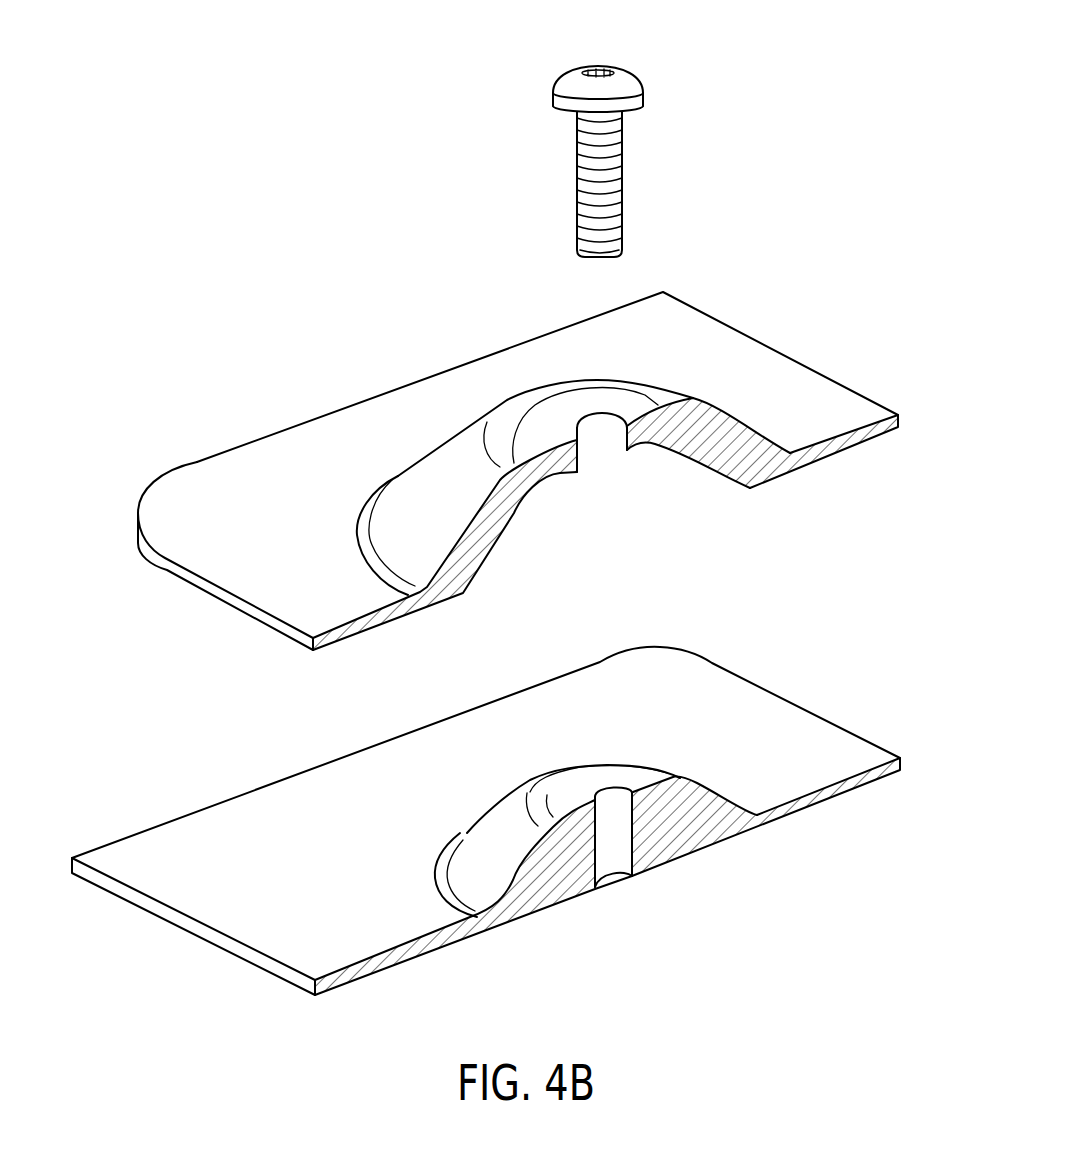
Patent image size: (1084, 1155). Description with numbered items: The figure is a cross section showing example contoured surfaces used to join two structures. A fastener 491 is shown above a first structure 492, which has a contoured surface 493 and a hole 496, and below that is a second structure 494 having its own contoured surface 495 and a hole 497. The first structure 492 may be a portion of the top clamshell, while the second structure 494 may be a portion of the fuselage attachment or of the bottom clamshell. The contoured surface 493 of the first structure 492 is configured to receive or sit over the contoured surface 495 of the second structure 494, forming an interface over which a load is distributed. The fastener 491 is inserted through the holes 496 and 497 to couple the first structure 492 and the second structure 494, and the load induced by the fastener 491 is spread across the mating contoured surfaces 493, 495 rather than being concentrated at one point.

The fastener 491 is at (577, 163).
The first structure 492 is at (205, 462).
The contoured surface 493 is at (673, 452).
The second structure 494 is at (813, 781).
The contoured surface 495 is at (488, 873).
The hole 496 is at (601, 490).
The hole 497 is at (612, 907).